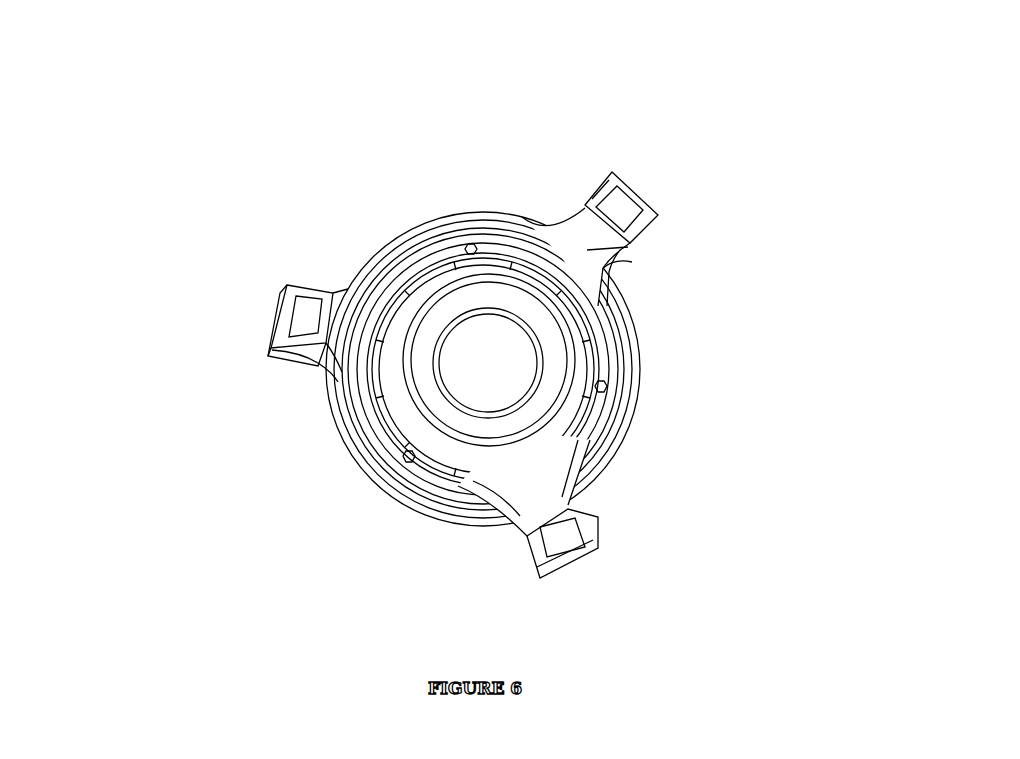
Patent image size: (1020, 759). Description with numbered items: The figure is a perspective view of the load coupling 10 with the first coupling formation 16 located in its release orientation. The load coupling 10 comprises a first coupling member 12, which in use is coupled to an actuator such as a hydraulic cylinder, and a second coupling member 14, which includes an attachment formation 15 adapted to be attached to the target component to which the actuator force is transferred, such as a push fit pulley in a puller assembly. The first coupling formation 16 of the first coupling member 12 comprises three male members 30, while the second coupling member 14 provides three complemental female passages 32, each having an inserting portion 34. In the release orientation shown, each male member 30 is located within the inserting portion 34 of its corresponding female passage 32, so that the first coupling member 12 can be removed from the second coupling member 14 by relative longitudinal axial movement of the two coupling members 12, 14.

The load coupling 10 is at (637, 93).
The first coupling member 12 is at (620, 397).
The second coupling member 14 is at (670, 185).
The attachment formation 15 is at (232, 327).
The first coupling formation 16 is at (633, 318).
The male member 30 is at (365, 294).
The female passage 32 is at (549, 218).
The inserting portion 34 is at (614, 257).